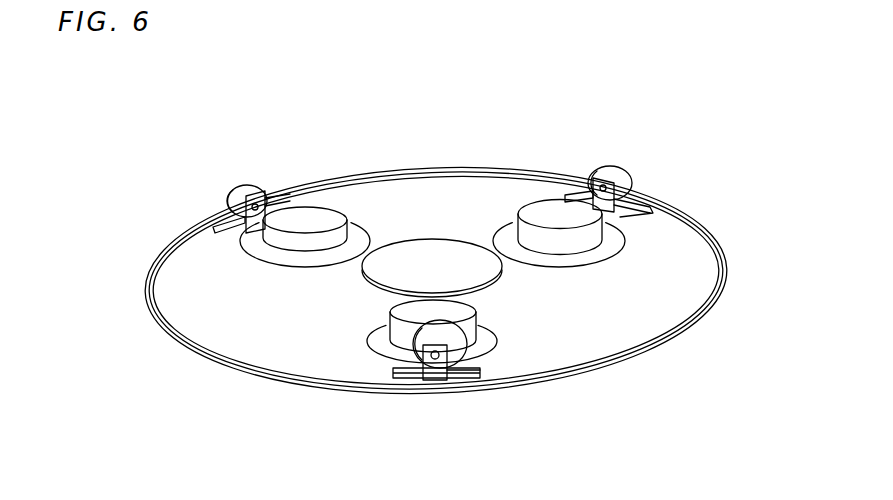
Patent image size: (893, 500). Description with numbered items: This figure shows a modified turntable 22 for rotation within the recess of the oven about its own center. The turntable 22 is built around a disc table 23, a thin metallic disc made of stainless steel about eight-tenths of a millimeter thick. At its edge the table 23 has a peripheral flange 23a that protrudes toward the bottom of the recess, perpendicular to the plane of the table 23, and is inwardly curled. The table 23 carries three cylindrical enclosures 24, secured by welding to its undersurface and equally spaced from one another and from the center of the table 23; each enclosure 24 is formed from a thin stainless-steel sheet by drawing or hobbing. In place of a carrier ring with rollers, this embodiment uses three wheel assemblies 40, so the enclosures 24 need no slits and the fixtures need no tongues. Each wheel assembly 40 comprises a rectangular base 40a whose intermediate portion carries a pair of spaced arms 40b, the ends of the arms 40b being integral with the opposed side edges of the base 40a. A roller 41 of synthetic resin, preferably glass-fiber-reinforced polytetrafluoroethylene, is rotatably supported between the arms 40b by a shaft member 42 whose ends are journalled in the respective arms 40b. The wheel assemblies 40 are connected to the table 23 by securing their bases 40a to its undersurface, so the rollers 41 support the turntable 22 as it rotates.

The turntable 22 is at (461, 161).
The disc table 23 is at (436, 240).
The peripheral flange 23a is at (360, 172).
The cylindrical enclosure 24 is at (273, 250).
The wheel assembly 40 is at (438, 284).
The rectangular base 40a is at (213, 231).
The arm 40b is at (272, 198).
The roller 41 is at (236, 190).
The shaft member 42 is at (232, 203).